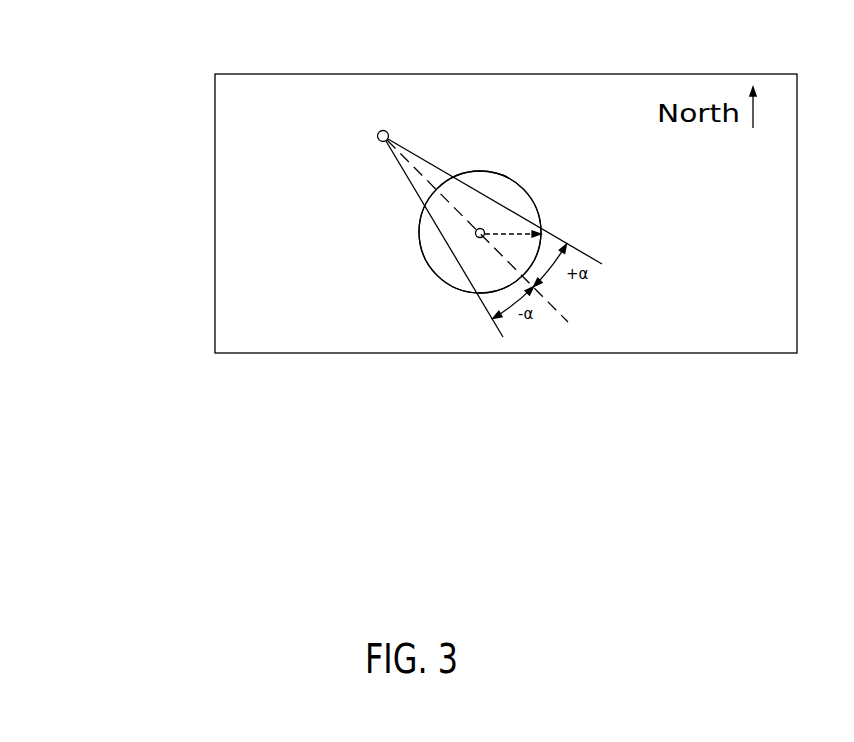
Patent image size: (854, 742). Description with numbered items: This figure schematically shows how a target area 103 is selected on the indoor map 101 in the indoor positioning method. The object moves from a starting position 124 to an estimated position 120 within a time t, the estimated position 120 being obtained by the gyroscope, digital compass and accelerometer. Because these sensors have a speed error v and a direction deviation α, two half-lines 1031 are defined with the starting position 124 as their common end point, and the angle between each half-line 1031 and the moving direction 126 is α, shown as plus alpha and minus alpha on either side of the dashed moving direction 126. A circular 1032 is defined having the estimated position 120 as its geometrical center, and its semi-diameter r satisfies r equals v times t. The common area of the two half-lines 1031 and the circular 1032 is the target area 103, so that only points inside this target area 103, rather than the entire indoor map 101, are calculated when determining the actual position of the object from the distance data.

The indoor map 101 is at (298, 98).
The target area 103 is at (480, 210).
The half-lines 1031 is at (448, 177).
The circular 1032 is at (440, 267).
The estimated position 120 is at (478, 240).
The starting position 124 is at (386, 130).
The moving direction 126 is at (561, 321).